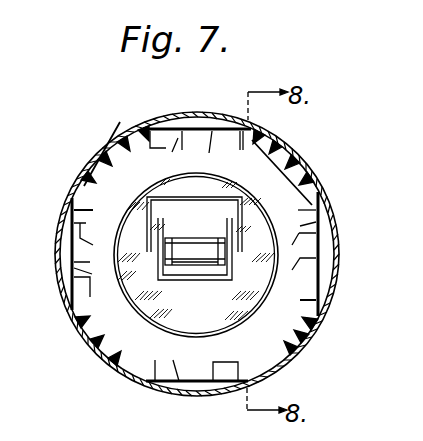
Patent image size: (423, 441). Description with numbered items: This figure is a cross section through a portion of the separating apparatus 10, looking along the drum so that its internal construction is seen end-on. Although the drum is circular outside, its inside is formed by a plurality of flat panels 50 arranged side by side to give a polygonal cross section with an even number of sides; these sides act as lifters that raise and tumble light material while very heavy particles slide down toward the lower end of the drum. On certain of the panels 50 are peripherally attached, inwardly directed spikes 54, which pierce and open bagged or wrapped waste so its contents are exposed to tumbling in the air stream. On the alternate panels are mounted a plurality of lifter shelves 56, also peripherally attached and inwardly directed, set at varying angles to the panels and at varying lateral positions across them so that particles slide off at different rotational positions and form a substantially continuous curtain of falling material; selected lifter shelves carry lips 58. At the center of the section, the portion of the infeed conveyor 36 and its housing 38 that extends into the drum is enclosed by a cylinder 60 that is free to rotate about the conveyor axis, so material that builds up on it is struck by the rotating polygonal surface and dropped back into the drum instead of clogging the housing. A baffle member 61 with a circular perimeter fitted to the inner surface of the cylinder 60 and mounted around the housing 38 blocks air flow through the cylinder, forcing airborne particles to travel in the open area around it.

The housing 10 is at (93, 154).
The infeed conveyor 36 is at (196, 261).
The housing 38 is at (200, 197).
The flat panels 50 is at (134, 355).
The spikes 54 is at (122, 140).
The lifter shelves 56 is at (76, 236).
The lips 58 is at (88, 262).
The cylinder 60 is at (117, 226).
The baffle member 61 is at (263, 236).